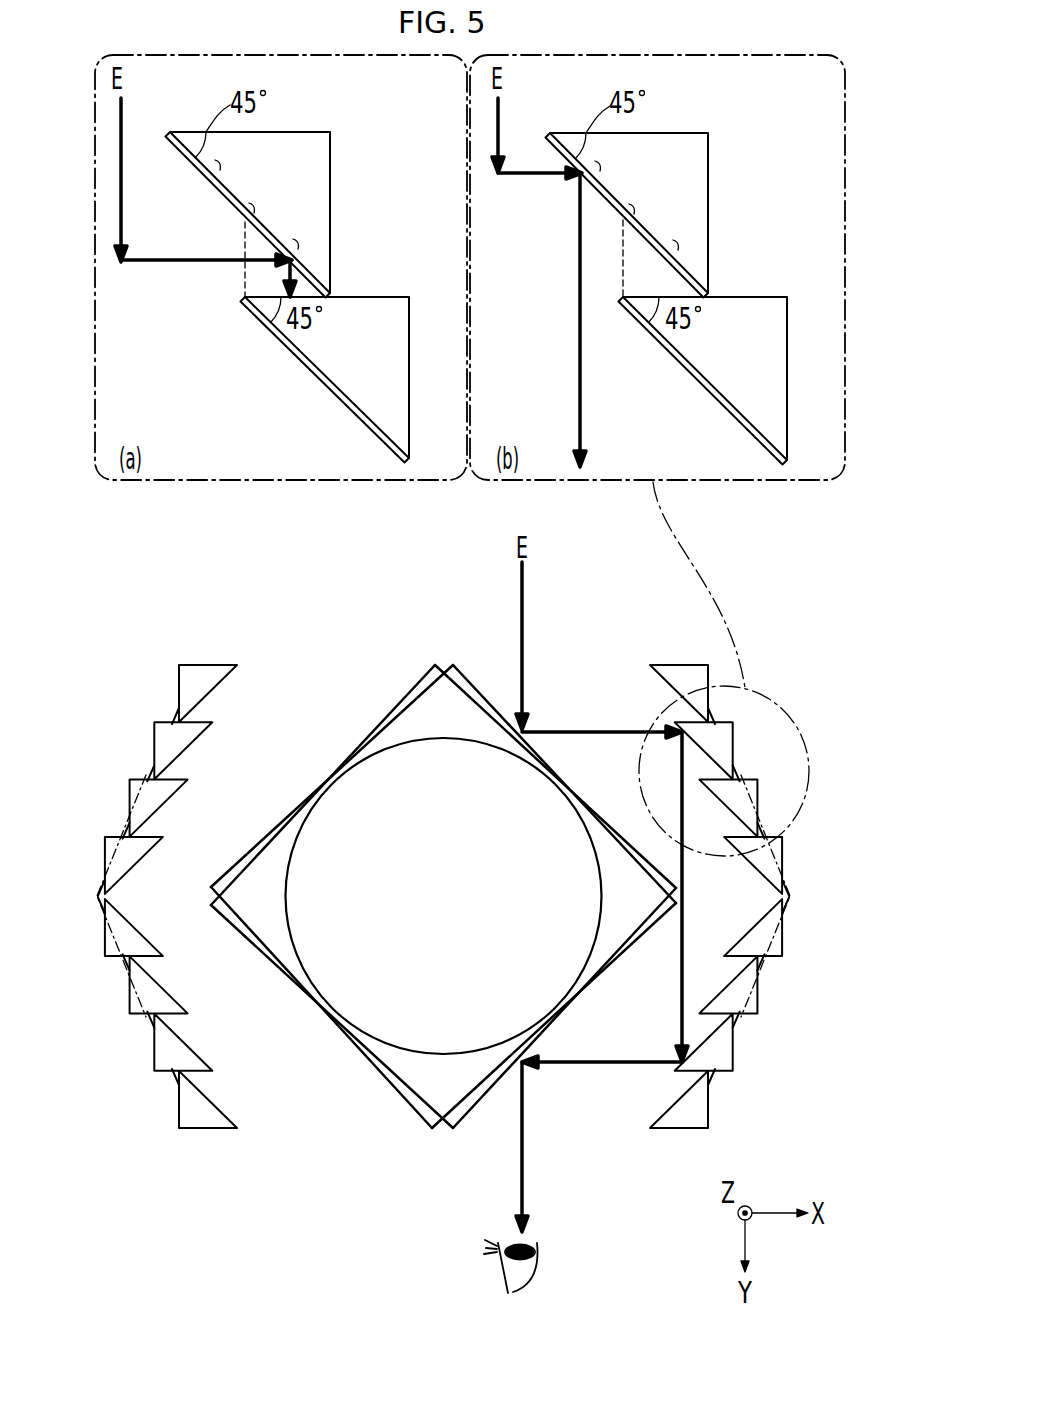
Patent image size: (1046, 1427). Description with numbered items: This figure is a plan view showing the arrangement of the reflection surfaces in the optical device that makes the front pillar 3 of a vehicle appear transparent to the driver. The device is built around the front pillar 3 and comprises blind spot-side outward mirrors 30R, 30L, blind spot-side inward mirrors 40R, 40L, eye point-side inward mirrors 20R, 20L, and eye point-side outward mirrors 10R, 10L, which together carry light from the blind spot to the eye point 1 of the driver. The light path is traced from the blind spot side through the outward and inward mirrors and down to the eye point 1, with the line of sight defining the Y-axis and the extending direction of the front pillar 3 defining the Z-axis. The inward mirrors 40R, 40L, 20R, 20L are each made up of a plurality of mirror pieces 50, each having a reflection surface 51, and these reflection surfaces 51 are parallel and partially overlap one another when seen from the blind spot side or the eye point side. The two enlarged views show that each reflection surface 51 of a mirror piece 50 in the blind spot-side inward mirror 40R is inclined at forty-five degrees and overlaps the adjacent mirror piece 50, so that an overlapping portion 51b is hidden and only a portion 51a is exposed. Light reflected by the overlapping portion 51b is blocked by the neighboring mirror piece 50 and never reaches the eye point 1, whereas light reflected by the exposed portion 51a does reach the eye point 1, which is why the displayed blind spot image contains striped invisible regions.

The eye point 1 is at (535, 1272).
The front pillar 3 is at (451, 915).
The eye point-side outward mirror 10L is at (412, 1106).
The eye point-side outward mirror 10R is at (478, 1106).
The eye point-side inward mirror 20L is at (218, 1107).
The eye point-side inward mirror 20R is at (672, 1100).
The blind spot-side outward mirror 30L is at (415, 692).
The blind spot-side outward mirror 30R is at (474, 692).
The blind spot-side inward mirror 40L is at (220, 688).
The blind spot-side inward mirror 40R is at (670, 693).
The mirror piece 50 is at (297, 128).
The reflection surface 51 is at (367, 417).
The exposed portion 51a is at (426, 153).
The overlapping portion 51b is at (473, 226).